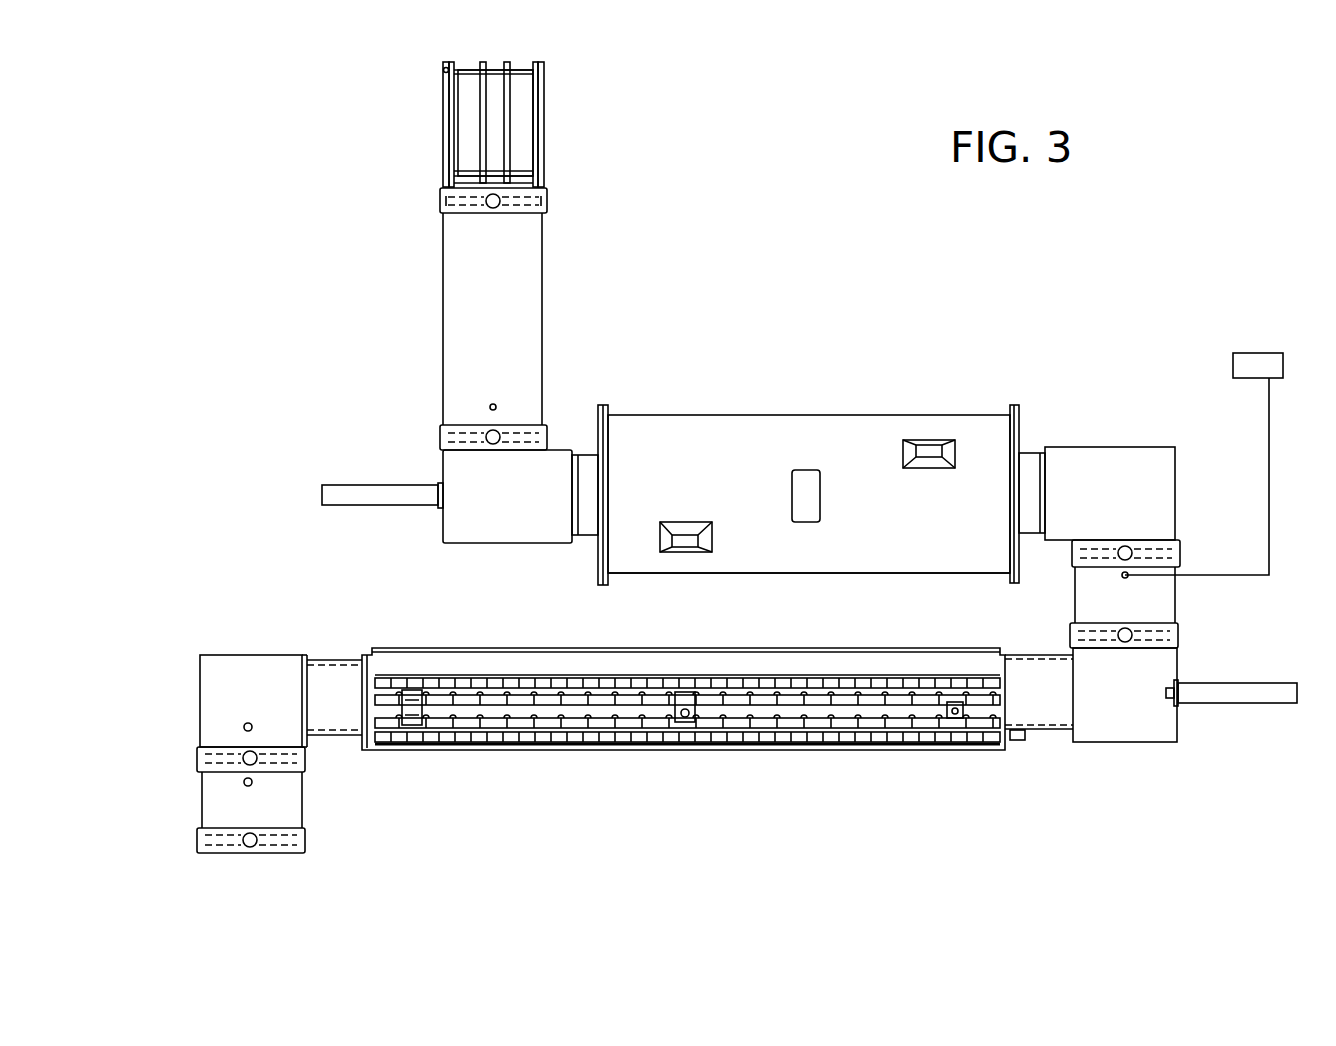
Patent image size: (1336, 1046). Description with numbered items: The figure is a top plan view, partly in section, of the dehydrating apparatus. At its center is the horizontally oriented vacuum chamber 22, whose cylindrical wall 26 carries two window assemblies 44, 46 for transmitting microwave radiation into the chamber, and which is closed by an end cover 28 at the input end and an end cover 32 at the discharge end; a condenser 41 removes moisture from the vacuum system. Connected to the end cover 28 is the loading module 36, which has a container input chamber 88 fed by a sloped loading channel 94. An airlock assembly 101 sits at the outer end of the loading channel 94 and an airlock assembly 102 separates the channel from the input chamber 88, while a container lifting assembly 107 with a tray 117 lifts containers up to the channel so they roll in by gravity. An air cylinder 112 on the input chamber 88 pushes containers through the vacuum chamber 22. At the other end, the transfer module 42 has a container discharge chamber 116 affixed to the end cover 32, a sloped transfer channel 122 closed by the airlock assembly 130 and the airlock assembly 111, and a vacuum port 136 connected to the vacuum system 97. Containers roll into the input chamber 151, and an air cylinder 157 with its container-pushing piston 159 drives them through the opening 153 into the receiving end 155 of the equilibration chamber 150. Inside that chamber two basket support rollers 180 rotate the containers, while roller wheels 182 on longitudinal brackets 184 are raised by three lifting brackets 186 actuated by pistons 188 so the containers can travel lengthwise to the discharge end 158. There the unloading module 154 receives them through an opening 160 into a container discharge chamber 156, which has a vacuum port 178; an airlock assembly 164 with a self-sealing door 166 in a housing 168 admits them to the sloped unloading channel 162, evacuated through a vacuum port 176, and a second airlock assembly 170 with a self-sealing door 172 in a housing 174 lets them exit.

The vacuum chamber 22 is at (763, 410).
The cylindrical wall 26 is at (766, 560).
The end cover 28 is at (592, 420).
The end cover 32 is at (1016, 408).
The loading module 36 is at (590, 250).
The condenser 41 is at (820, 490).
The transfer module 42 is at (1122, 392).
The window assembly 44 is at (682, 532).
The window assembly 46 is at (930, 470).
The container input chamber 88 is at (448, 527).
The loading channel 94 is at (490, 274).
The vacuum system 97 is at (1250, 360).
The airlock assembly 101 is at (440, 199).
The airlock assembly 102 is at (472, 423).
The container lifting assembly 107 is at (435, 130).
The airlock assembly 111 is at (1145, 650).
The air cylinder 112 is at (350, 485).
The container discharge chamber 116 is at (1132, 455).
The tray 117 is at (514, 128).
The transfer channel 122 is at (1090, 592).
The airlock assembly 130 is at (1147, 540).
The vacuum port 136 is at (1127, 578).
The equilibration chamber 150 is at (606, 645).
The input chamber 151 is at (1118, 747).
The opening 153 is at (1068, 707).
The unloading module 154 is at (208, 635).
The receiving end 155 is at (1042, 656).
The container discharge chamber 156 is at (265, 650).
The air cylinder 157 is at (1236, 702).
The discharge end 158 is at (337, 660).
The container-pushing piston 159 is at (1165, 710).
The opening 160 is at (315, 703).
The unloading channel 162 is at (220, 795).
The airlock assembly 164 is at (228, 745).
The self-sealing door 166 is at (282, 762).
The housing 168 is at (265, 745).
The second airlock assembly 170 is at (312, 852).
The self-sealing door 172 is at (270, 838).
The housing 174 is at (210, 854).
The vacuum port 176 is at (246, 786).
The vacuum port 178 is at (244, 722).
The basket support rollers 180 is at (905, 685).
The roller wheels 182 is at (762, 692).
The longitudinal brackets 184 is at (632, 697).
The lifting brackets 186 is at (965, 708).
The pistons 188 is at (414, 700).